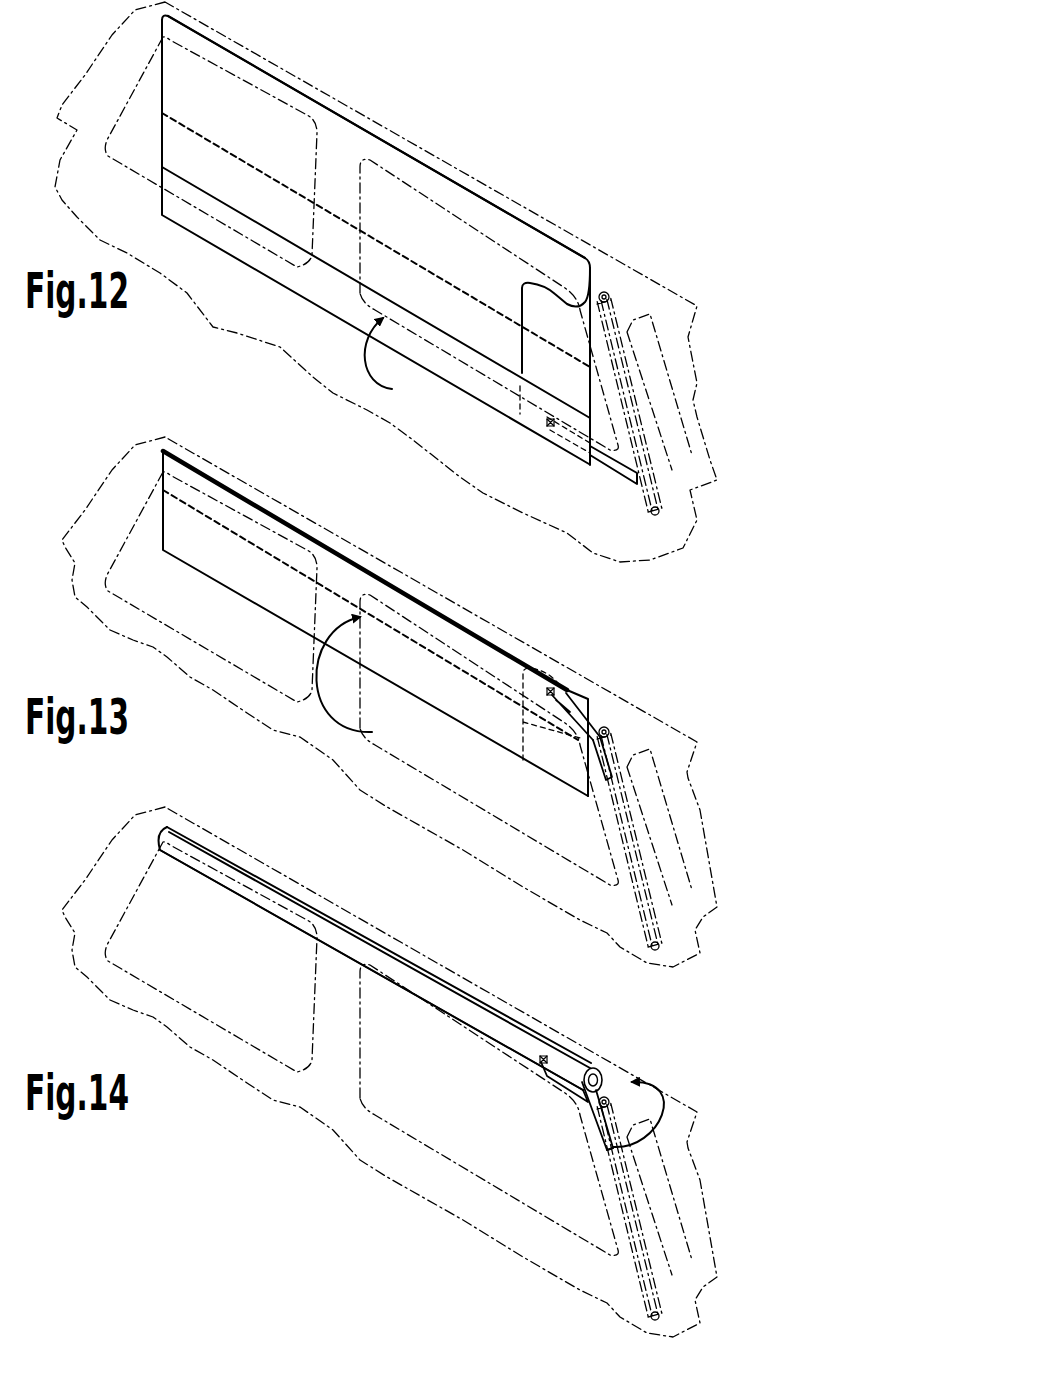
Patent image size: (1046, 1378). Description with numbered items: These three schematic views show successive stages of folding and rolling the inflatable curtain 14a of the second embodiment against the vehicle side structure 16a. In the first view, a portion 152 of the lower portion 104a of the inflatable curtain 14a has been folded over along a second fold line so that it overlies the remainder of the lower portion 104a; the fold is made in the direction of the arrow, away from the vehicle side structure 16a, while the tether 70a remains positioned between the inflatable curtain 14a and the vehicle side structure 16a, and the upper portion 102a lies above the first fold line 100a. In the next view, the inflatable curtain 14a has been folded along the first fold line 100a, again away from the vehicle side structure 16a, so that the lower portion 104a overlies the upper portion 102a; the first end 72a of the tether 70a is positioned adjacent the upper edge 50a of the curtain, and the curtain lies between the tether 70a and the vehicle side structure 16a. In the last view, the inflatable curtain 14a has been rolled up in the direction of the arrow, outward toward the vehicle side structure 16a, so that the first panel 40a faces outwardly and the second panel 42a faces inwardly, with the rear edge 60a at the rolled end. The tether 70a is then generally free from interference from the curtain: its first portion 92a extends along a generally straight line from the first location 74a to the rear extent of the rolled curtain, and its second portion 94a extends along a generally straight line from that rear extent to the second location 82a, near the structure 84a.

In FIG. 12, the inflatable curtain 14a is at (342, 160).
In FIG. 13, the inflatable curtain 14a is at (273, 547).
In FIG. 14, the inflatable curtain 14a is at (340, 947).
In FIG. 12, the vehicle side structure 16a is at (313, 84).
In FIG. 13, the vehicle side structure 16a is at (221, 472).
In FIG. 14, the vehicle side structure 16a is at (390, 934).
In FIG. 12, the upper portion 102a is at (240, 93).
In FIG. 12, the lower portion 104a is at (267, 200).
In FIG. 12, the first fold line 100a is at (449, 276).
In FIG. 12, the portion 152 is at (337, 303).
In FIG. 12, the first location 74a is at (551, 426).
In FIG. 13, the first location 74a is at (548, 688).
In FIG. 14, the first location 74a is at (543, 1056).
In FIG. 12, the tether 70a is at (610, 463).
In FIG. 13, the tether 70a is at (582, 695).
In FIG. 12, the strut 84a is at (620, 379).
In FIG. 13, the strut 84a is at (627, 836).
In FIG. 14, the strut 84a is at (628, 1232).
In FIG. 13, the upper edge 50a is at (413, 594).
In FIG. 13, the first end 72a is at (567, 697).
In FIG. 13, the second location 82a is at (587, 788).
In FIG. 14, the second location 82a is at (600, 1148).
In FIG. 14, the first panel 40a is at (423, 1000).
In FIG. 14, the second panel 42a is at (603, 1080).
In FIG. 14, the rear edge 60a is at (630, 1072).
In FIG. 14, the first portion 92a is at (563, 1074).
In FIG. 14, the second portion 94a is at (583, 1100).